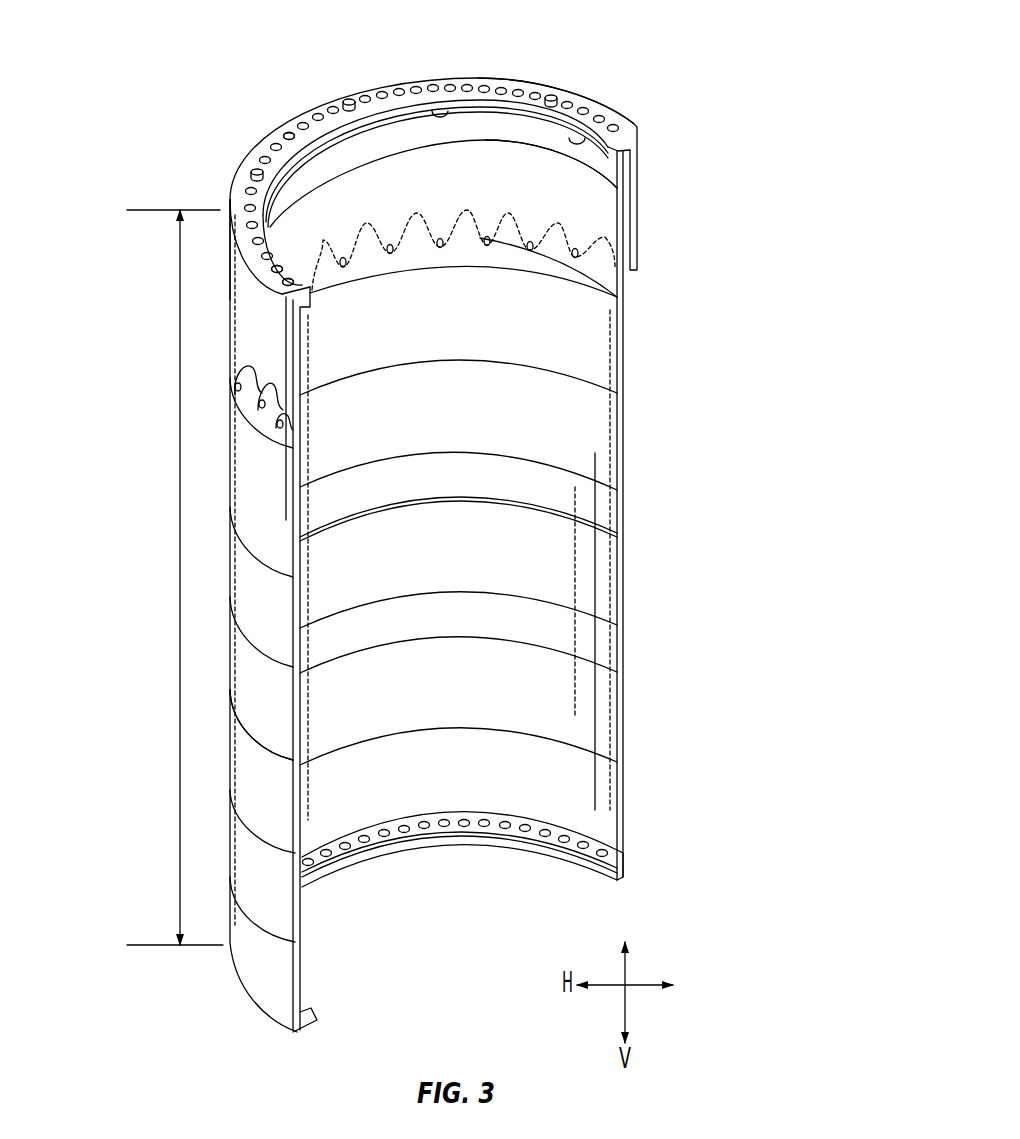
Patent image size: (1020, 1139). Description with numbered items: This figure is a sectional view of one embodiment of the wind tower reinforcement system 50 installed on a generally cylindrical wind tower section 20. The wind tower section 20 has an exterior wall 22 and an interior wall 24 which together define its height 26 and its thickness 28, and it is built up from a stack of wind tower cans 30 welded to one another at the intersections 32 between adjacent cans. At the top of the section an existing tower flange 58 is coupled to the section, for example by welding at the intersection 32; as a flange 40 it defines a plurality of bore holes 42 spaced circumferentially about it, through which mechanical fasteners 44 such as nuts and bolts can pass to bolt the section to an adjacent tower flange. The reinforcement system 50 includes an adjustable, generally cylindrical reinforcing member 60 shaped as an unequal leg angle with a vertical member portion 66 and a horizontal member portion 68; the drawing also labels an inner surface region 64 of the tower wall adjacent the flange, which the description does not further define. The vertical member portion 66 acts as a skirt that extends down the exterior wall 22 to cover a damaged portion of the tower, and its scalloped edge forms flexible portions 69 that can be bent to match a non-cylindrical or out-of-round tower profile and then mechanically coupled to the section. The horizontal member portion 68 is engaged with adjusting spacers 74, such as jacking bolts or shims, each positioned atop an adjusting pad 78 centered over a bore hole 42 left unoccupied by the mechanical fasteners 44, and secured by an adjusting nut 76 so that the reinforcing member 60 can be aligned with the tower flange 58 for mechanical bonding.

The wind tower section 20 is at (700, 160).
The exterior wall 22 is at (245, 493).
The interior wall 24 is at (600, 327).
The height 26 is at (178, 673).
The thickness 28 is at (298, 735).
The wind tower can 30 is at (598, 353).
The intersection 32 is at (600, 398).
The flange 40 is at (608, 112).
The bore hole 42 is at (480, 88).
The mechanical fastener 44 is at (345, 98).
The reinforcement system 50 is at (233, 78).
The tower flange 58 is at (603, 168).
The reinforcing member 60 is at (510, 80).
The liner inner wall 64 is at (603, 212).
The vertical member portion 66 is at (247, 332).
The horizontal member portion 68 is at (292, 133).
The flexible portion 69 is at (273, 423).
The adjusting spacer 74 is at (465, 107).
The adjusting nut 76 is at (459, 252).
The adjusting pad 78 is at (508, 127).